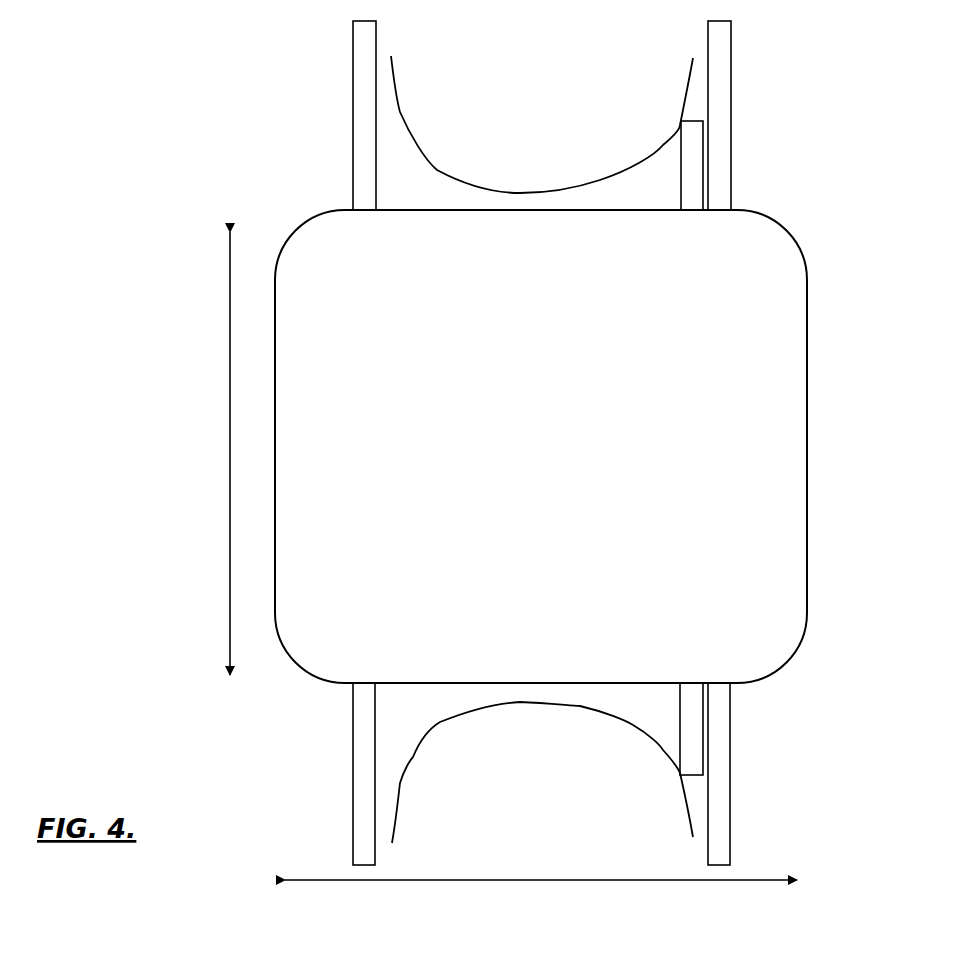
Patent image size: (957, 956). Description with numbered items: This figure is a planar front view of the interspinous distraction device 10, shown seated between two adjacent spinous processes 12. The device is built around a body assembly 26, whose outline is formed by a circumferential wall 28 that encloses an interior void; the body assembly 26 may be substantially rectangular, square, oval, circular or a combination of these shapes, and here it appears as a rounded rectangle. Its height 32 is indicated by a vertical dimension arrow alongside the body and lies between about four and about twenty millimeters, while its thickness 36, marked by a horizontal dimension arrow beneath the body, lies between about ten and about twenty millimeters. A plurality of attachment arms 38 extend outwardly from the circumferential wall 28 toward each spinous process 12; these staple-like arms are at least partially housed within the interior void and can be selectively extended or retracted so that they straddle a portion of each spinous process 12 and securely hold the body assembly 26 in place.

The interspinous distraction device 10 is at (802, 225).
The spinous process 12 is at (542, 449).
The body assembly 26 is at (822, 324).
The circumferential wall 28 is at (807, 453).
The height 32 is at (213, 453).
The thickness 36 is at (541, 897).
The attachment arms 38 is at (353, 140).